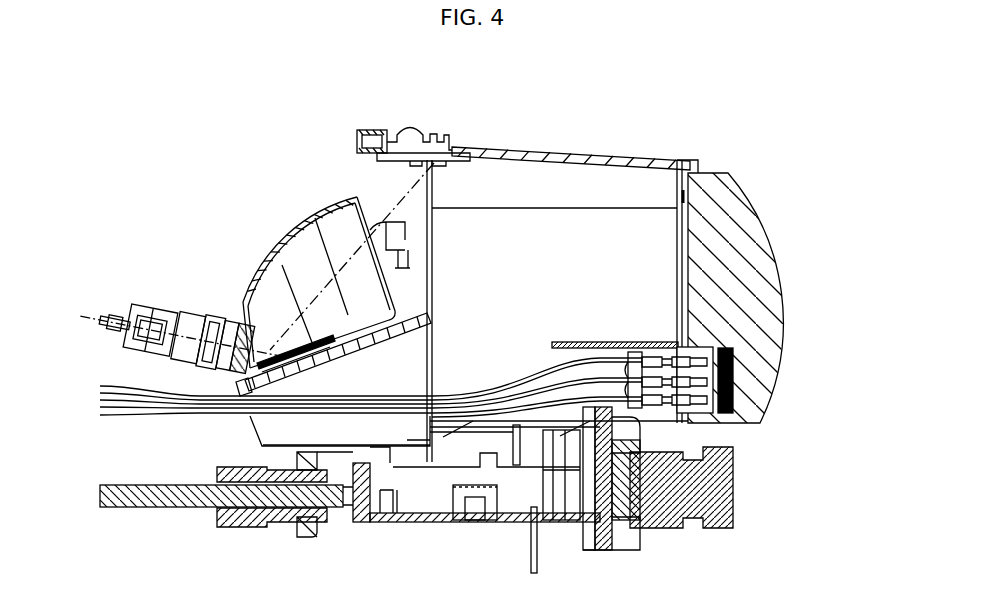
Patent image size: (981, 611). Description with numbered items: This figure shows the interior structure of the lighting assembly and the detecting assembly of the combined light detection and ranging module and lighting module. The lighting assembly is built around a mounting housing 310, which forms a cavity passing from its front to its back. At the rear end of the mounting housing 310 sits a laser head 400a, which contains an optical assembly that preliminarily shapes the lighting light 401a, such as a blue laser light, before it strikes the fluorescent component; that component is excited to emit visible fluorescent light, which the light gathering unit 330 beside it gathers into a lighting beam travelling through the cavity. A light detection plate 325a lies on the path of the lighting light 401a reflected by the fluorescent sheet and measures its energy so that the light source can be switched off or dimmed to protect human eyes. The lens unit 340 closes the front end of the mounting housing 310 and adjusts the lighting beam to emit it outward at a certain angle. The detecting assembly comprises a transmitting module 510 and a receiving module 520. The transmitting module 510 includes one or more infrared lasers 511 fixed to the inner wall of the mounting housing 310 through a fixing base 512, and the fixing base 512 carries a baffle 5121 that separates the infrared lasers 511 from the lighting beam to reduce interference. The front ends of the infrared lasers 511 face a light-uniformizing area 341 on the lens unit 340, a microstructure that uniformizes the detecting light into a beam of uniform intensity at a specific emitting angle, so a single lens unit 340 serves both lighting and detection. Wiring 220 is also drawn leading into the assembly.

The mounting housing 310 is at (578, 152).
The light detection plate 325a is at (452, 152).
The light gathering unit 330 is at (297, 240).
The lens unit 340 is at (755, 228).
The light-uniformizing area 341 is at (733, 383).
The laser head 400a is at (146, 315).
The lighting light 401a is at (240, 337).
The wire harness 220 is at (150, 395).
The fixing base 512 is at (690, 342).
The baffle 5121 is at (672, 342).
The transmitting module 510 is at (756, 417).
The infrared laser 511 is at (700, 400).
The receiving module 520 is at (718, 500).